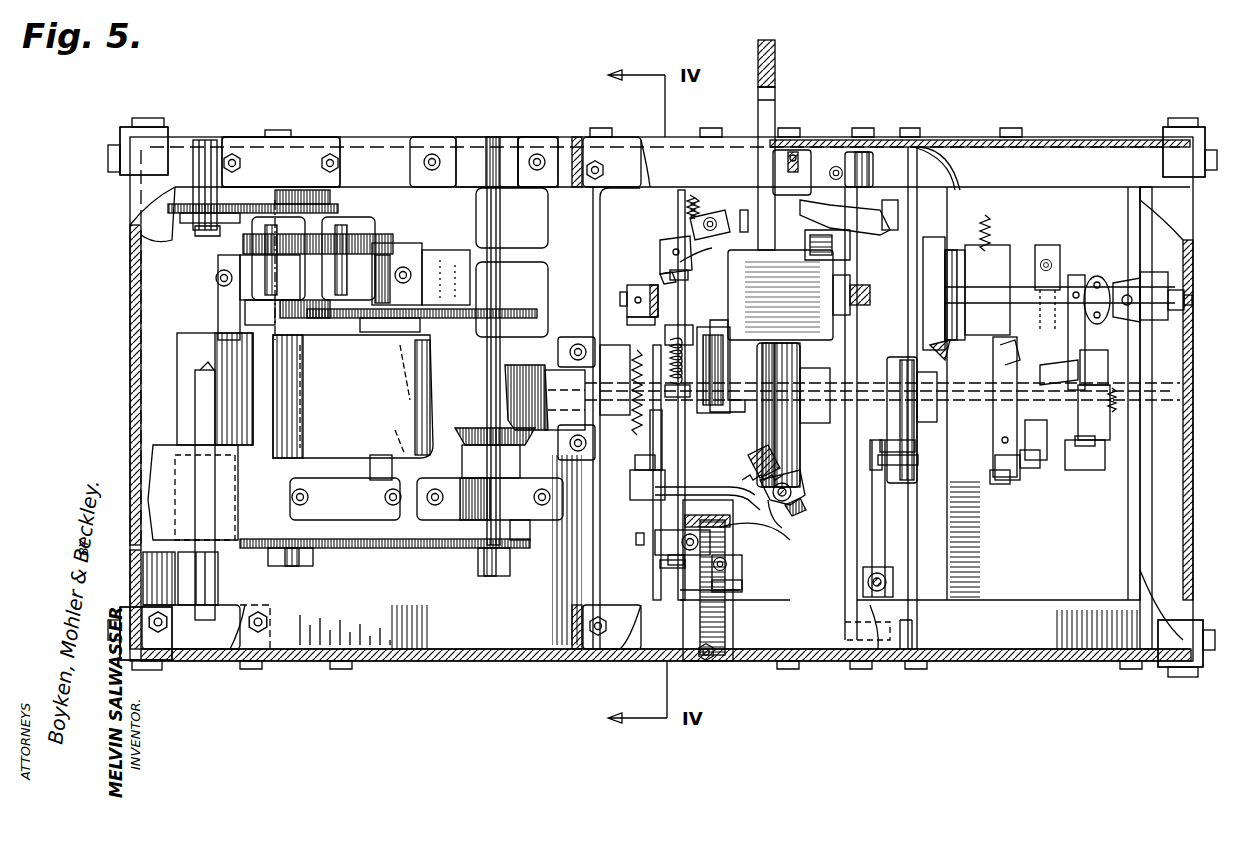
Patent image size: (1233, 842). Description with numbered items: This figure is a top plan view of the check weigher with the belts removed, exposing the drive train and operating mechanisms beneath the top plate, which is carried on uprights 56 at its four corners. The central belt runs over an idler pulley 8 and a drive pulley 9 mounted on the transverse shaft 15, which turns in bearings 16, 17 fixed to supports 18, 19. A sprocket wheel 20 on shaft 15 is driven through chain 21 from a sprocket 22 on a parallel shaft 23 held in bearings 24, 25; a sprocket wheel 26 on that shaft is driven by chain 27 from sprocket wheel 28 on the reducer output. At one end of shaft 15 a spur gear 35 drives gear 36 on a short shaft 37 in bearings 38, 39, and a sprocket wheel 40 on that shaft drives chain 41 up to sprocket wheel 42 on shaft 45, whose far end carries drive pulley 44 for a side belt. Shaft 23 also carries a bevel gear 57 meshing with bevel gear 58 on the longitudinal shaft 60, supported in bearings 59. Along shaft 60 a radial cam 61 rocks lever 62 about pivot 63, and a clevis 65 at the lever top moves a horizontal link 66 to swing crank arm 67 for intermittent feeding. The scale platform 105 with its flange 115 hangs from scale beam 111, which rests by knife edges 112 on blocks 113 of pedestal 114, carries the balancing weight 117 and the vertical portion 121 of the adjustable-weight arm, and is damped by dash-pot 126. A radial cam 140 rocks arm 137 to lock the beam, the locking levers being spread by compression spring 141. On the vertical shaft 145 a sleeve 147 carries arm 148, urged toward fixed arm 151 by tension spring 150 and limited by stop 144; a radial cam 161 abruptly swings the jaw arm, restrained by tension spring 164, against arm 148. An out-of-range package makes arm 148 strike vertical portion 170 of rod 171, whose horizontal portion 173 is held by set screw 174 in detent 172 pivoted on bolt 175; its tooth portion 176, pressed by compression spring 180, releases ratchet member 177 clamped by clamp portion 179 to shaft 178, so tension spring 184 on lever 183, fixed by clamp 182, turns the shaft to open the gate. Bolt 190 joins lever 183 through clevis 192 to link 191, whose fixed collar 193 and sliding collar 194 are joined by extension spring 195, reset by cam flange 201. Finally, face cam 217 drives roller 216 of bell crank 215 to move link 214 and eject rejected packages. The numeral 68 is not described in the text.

The idler pulley 8 is at (185, 417).
The drive pulley 9 is at (425, 372).
The horizontal shaft 15 is at (355, 225).
The bearing 16 is at (392, 243).
The bearing 17 is at (385, 520).
The support 18 is at (435, 258).
The support 19 is at (425, 520).
The sprocket wheel 20 is at (365, 318).
The chain 21 is at (440, 318).
The sprocket 22 is at (540, 320).
The shaft 23 is at (498, 230).
The bearing 24 is at (538, 150).
The bearing 25 is at (530, 540).
The sprocket wheel 26 is at (478, 560).
The chain 27 is at (420, 548).
The sprocket wheel 28 is at (305, 555).
The spur gear 35 is at (390, 236).
The gear 36 is at (235, 258).
The shaft 37 is at (280, 130).
The bearing 38 is at (243, 137).
The bearing 39 is at (258, 300).
The sprocket wheel 40 is at (320, 200).
The chain 41 is at (195, 221).
The sprocket wheel 42 is at (175, 208).
The drive pulley 44 is at (180, 492).
The shaft 45 is at (205, 231).
The uprights 56 is at (120, 170).
The bevel gear 57 is at (462, 428).
The bevel gear 58 is at (545, 425).
The bearings 59 is at (605, 368).
The horizontal shaft 60 is at (614, 410).
The radial cam 61 is at (1038, 465).
The lever 62 is at (1000, 485).
The pivot 63 is at (1032, 470).
The clevis 65 is at (1010, 482).
The horizontal link 66 is at (990, 430).
The crank arm 67 is at (1005, 360).
The gear 68 is at (915, 345).
The platform 105 is at (799, 295).
The scale beam 111 is at (835, 310).
The knife edges 112 is at (930, 237).
The blocks 113 is at (940, 250).
The stationary pedestal 114 is at (950, 240).
The flange 115 is at (758, 228).
The weight 117 is at (1152, 278).
The vertical portion 121 is at (1040, 258).
The dash-pot 126 is at (1092, 280).
The arm 137 is at (1090, 470).
The radial cam 140 is at (1075, 420).
The compression spring 141 is at (1112, 400).
The stop 144 is at (750, 462).
The shaft 145 is at (793, 490).
The sleeve 147 is at (805, 507).
The arm 148 is at (775, 512).
The tension spring 150 is at (745, 478).
The arm 151 is at (762, 452).
The radial cam 161 is at (665, 438).
The tension spring 164 is at (636, 440).
The vertically extending portion 170 is at (730, 500).
The rod 171 is at (675, 505).
The detent 172 is at (636, 537).
The horizontal portion 173 is at (660, 510).
The set screw 174 is at (660, 545).
The bolt 175 is at (680, 565).
The tooth portion 176 is at (730, 522).
The ratchet member 177 is at (742, 580).
The shaft 178 is at (700, 206).
The clamp portion 179 is at (745, 595).
The compression spring 180 is at (760, 525).
The clamp 182 is at (742, 562).
The lever 183 is at (665, 242).
The tension spring 184 is at (690, 212).
The bolt 190 is at (660, 256).
The link 191 is at (660, 290).
The clevis 192 is at (676, 272).
The fixed collar 193 is at (680, 400).
The collar 194 is at (668, 340).
The extension spring 195 is at (700, 366).
The flange 201 is at (710, 330).
The link 214 is at (893, 590).
The bell crank 215 is at (886, 540).
The roller 216 is at (905, 468).
The face cam 217 is at (885, 480).